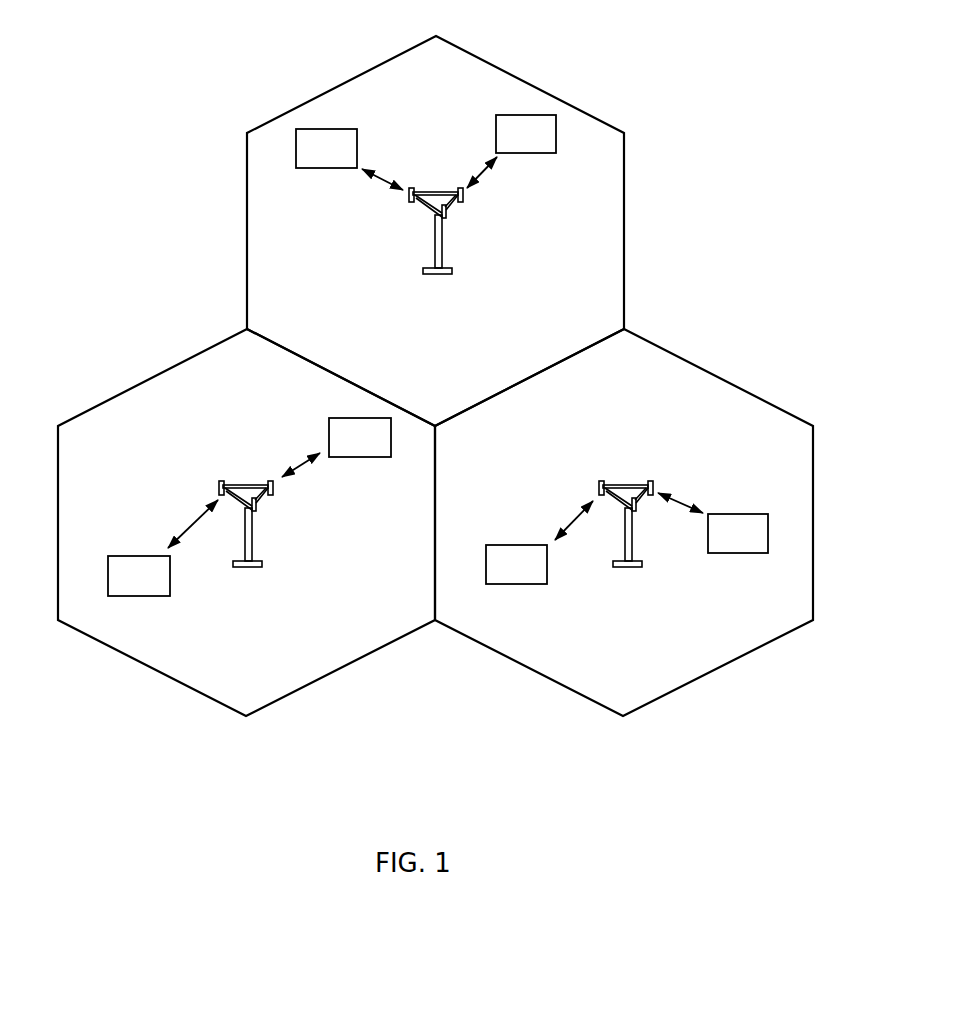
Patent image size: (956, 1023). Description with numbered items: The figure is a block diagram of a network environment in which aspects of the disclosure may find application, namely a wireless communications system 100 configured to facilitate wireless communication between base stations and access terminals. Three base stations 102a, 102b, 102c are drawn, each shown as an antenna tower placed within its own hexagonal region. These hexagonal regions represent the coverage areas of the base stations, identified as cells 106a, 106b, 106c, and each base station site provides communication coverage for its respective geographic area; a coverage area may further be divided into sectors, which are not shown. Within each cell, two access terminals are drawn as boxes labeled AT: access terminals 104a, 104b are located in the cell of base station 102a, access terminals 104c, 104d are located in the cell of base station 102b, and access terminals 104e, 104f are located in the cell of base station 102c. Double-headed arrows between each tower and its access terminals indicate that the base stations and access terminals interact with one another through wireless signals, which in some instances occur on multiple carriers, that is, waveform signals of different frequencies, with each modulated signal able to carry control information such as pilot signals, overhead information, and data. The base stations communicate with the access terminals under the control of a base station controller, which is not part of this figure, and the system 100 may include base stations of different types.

The wireless communications system 100 is at (754, 78).
The base station 102a is at (250, 483).
The base station 102b is at (440, 190).
The base station 102c is at (630, 483).
The access terminal 104a is at (147, 556).
The access terminal 104b is at (358, 457).
The access terminal 104c is at (333, 168).
The access terminal 104d is at (541, 153).
The access terminal 104e is at (522, 545).
The access terminal 104f is at (728, 514).
The cell 106a is at (131, 387).
The cell 106b is at (515, 77).
The cell 106c is at (718, 377).